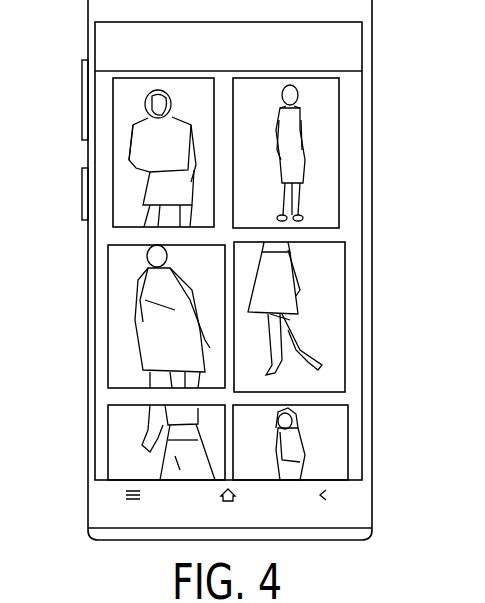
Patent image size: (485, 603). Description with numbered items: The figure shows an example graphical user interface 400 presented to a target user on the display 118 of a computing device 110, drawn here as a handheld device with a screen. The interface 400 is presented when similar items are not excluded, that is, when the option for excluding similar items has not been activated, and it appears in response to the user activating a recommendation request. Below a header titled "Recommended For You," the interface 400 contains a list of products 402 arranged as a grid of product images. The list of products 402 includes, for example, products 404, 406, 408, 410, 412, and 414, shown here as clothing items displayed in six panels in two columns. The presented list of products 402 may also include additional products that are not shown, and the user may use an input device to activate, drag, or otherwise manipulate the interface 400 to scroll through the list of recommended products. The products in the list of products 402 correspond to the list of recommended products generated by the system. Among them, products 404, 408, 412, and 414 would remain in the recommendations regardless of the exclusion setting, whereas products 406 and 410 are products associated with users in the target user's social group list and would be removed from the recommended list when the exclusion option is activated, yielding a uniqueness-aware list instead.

The computing device 110 is at (97, 503).
The display 118 is at (102, 460).
The graphical user interface 400 is at (100, 82).
The list of products 402 is at (100, 33).
The product 404 is at (152, 160).
The product 406 is at (145, 298).
The product 408 is at (150, 455).
The product 410 is at (305, 160).
The product 412 is at (300, 312).
The product 414 is at (298, 448).